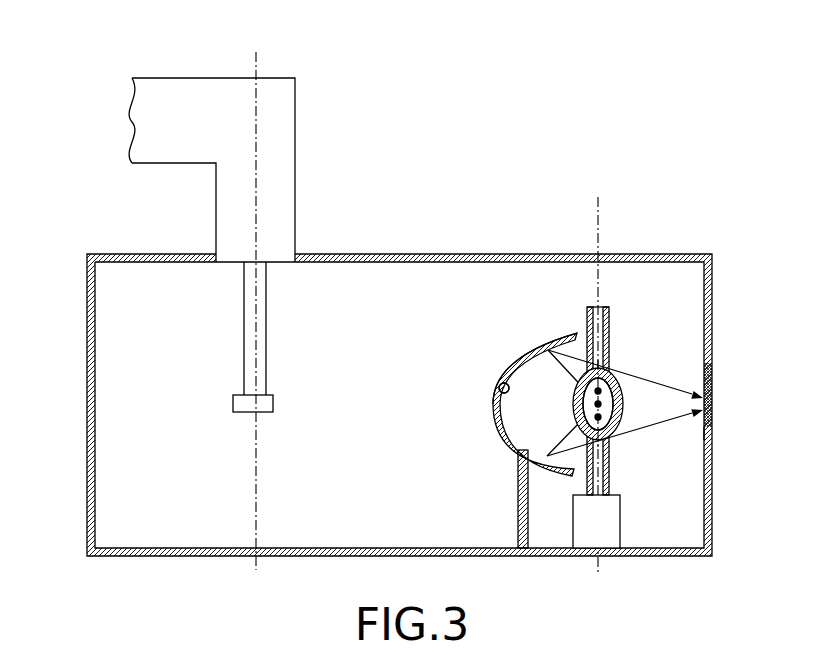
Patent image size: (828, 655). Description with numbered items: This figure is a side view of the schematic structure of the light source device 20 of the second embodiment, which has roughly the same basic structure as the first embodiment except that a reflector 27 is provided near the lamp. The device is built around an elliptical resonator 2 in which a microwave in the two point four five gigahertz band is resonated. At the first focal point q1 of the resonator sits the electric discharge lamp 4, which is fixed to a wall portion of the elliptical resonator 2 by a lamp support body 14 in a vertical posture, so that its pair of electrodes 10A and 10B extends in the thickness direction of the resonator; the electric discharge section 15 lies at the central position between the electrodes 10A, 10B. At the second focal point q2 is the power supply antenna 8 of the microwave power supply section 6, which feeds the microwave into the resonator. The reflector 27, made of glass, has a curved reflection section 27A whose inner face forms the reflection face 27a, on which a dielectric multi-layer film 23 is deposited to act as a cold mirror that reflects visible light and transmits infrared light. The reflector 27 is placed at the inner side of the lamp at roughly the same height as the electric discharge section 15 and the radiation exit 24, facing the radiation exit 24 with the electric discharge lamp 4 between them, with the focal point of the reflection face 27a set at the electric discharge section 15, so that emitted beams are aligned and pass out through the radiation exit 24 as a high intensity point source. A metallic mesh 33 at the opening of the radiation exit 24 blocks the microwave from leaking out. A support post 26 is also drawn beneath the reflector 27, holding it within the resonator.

The elliptical resonator 2 is at (684, 246).
The electric discharge lamp 4 is at (622, 305).
The microwave power supply section 6 is at (170, 66).
The power supply antenna 8 is at (233, 403).
The electrode 10A is at (617, 428).
The electrode 10B is at (617, 381).
The lamp support body 14 is at (613, 526).
The electric discharge section 15 is at (575, 405).
The light source device 20 is at (690, 114).
The dielectric multi-layer film 23 is at (443, 386).
The radiation exit 24 is at (713, 367).
The reflector support post 26 is at (517, 513).
The reflector 27 is at (497, 445).
The reflection section 27A is at (528, 354).
The reflection face 27a is at (497, 391).
The metallic mesh 33 is at (713, 436).
The first focal point q1 is at (598, 371).
The second focal point q2 is at (256, 299).